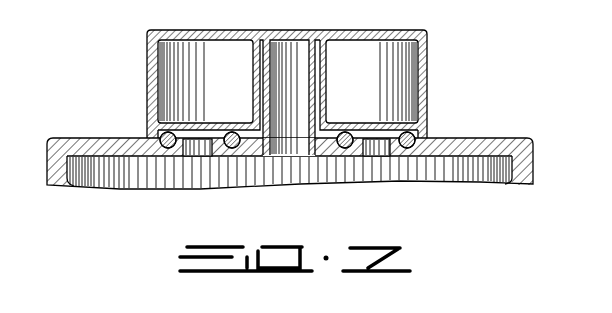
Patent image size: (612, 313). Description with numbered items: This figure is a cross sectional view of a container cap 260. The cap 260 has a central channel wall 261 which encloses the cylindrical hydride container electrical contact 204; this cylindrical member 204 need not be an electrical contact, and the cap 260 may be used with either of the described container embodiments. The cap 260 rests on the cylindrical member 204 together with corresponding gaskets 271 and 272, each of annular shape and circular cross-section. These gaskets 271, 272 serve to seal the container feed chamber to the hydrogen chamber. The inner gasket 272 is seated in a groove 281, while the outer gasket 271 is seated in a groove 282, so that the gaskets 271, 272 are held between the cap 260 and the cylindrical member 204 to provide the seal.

The cylindrical hydride container electrical contact 204 is at (304, 133).
The cap 260 is at (323, 29).
The central channel wall 261 is at (327, 79).
The gasket 271 is at (156, 158).
The gasket 272 is at (225, 160).
The groove 281 is at (421, 158).
The groove 282 is at (353, 157).